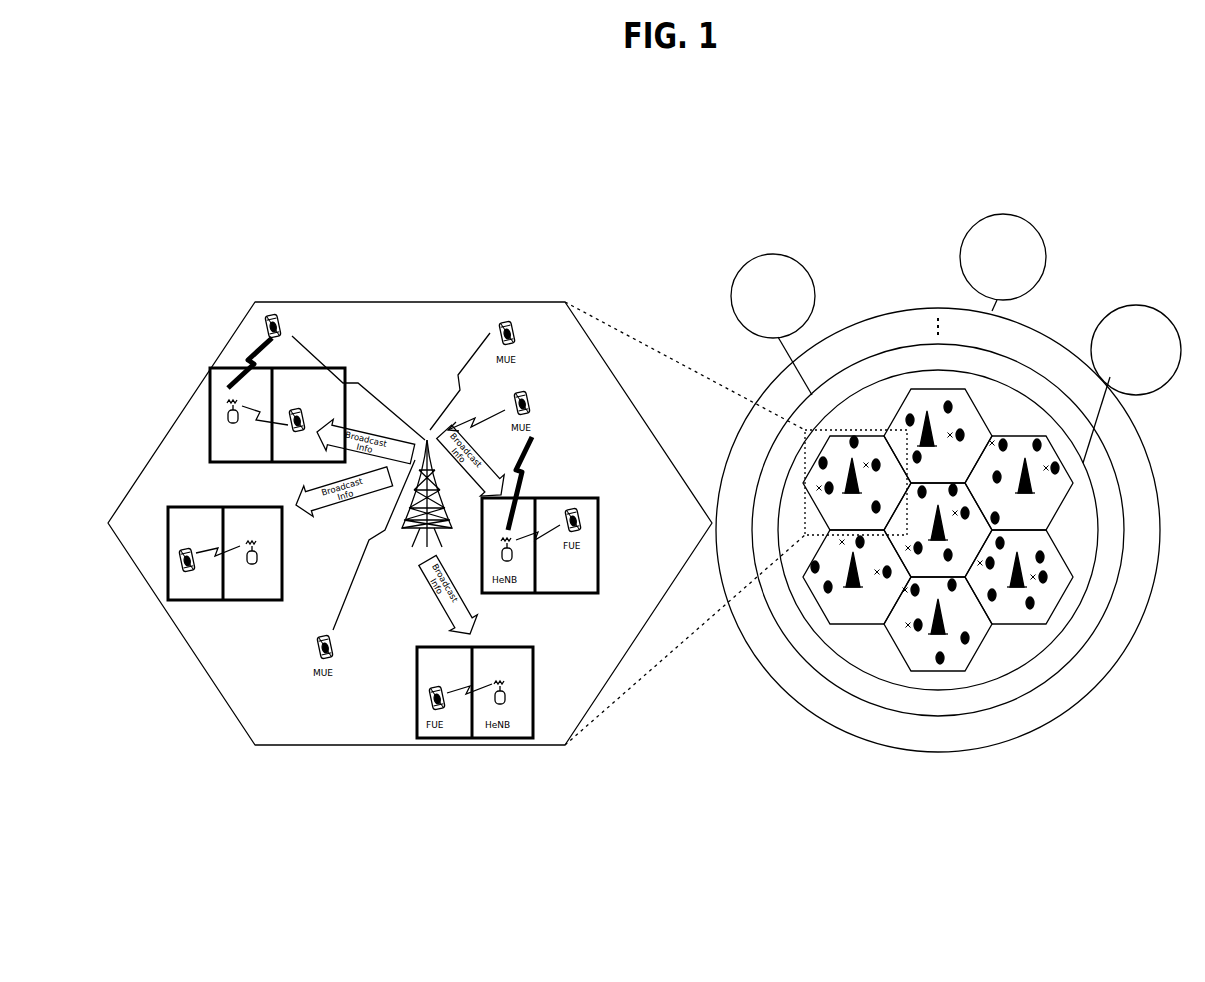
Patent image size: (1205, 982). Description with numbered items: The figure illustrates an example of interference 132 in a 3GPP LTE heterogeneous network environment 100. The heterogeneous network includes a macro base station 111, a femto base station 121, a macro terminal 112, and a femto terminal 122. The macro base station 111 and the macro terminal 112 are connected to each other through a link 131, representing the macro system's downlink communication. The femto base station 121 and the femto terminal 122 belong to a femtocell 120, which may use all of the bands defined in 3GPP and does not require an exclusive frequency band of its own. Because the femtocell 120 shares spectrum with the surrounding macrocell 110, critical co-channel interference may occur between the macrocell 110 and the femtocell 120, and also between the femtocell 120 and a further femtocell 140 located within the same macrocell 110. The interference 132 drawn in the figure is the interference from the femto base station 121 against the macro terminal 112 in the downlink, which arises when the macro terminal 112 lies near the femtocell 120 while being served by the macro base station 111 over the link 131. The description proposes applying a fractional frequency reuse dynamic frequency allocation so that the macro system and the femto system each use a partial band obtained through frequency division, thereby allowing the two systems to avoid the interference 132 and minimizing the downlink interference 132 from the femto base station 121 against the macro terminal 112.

The 3GPP LTE heterogeneous network environment 100 is at (957, 786).
The macrocell 110 is at (402, 301).
The macro base station 111 is at (432, 535).
The macro terminal 112 is at (277, 314).
The femtocell 120 is at (227, 368).
The femto base station 121 is at (222, 410).
The femto terminal 122 is at (267, 435).
The link 131 is at (333, 362).
The interference 132 is at (250, 348).
The femtocell 140 is at (201, 572).